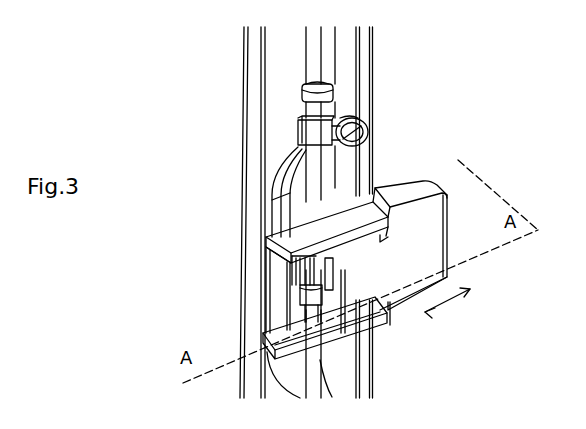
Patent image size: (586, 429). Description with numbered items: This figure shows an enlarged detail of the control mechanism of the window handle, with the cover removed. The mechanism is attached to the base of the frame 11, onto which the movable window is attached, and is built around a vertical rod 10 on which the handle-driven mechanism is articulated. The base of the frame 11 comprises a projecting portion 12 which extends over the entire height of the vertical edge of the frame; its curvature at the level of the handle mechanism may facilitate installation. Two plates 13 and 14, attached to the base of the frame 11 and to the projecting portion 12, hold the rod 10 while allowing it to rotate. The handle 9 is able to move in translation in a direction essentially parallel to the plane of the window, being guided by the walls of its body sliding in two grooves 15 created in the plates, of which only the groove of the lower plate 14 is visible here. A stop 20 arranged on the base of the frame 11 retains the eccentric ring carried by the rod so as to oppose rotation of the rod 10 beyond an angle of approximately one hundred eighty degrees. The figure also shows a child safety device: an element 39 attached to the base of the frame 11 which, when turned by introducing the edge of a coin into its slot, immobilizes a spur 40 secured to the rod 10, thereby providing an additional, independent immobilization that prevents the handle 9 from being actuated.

The handle 9 is at (416, 263).
The rod 10 is at (311, 55).
The base of the frame 11 is at (292, 79).
The projecting portion 12 is at (287, 196).
The plate 13 is at (365, 218).
The lower plate 14 is at (306, 333).
The grooves 15 is at (330, 345).
The stop 20 is at (300, 287).
The child safety element 39 is at (299, 127).
The spur 40 is at (336, 90).